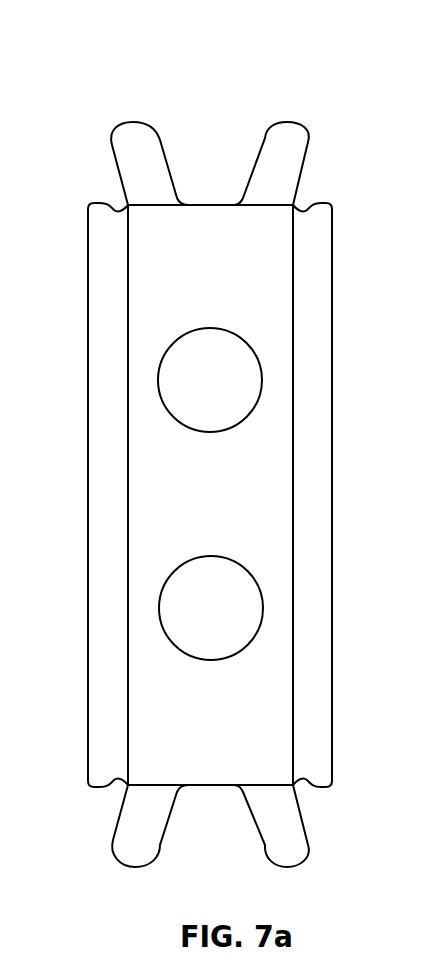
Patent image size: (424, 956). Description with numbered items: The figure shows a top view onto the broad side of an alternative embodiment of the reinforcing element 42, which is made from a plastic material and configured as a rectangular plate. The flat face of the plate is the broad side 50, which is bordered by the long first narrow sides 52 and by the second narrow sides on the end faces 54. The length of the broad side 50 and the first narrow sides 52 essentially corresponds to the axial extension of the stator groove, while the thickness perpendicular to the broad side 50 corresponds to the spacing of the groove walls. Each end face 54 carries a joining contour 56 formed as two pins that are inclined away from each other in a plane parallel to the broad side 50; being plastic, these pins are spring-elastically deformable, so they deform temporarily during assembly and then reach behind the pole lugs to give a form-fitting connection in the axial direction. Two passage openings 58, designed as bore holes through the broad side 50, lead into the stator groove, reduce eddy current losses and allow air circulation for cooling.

The reinforcing element 42 is at (63, 137).
The broad side 50 is at (270, 703).
The first narrow side 52 is at (334, 375).
The second narrow side on the end face 54 is at (218, 788).
The joining contour 56 is at (153, 142).
The passage openings 58 is at (222, 602).